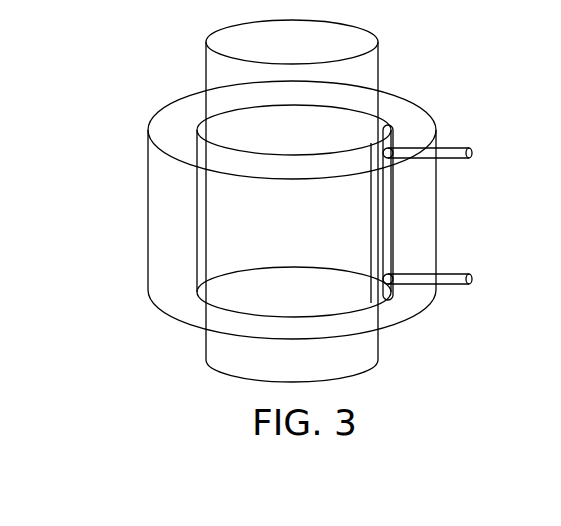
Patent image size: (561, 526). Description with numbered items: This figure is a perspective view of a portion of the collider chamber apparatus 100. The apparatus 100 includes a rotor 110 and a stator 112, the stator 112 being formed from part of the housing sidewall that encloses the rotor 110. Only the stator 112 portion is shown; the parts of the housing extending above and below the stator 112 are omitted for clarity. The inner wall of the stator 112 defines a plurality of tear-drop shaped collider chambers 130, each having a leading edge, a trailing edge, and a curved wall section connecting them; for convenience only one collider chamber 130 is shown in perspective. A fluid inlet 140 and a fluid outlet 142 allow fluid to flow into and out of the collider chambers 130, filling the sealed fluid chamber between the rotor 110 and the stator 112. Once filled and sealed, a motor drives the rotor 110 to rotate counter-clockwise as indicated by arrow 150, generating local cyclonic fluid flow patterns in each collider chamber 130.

The collider chamber apparatus 100 is at (159, 357).
The rotor 110 is at (206, 64).
The stator 112 is at (139, 174).
The collider chamber 130 is at (393, 127).
The fluid inlet 140 is at (455, 272).
The fluid outlet 142 is at (455, 160).
The arrow 150 is at (277, 30).